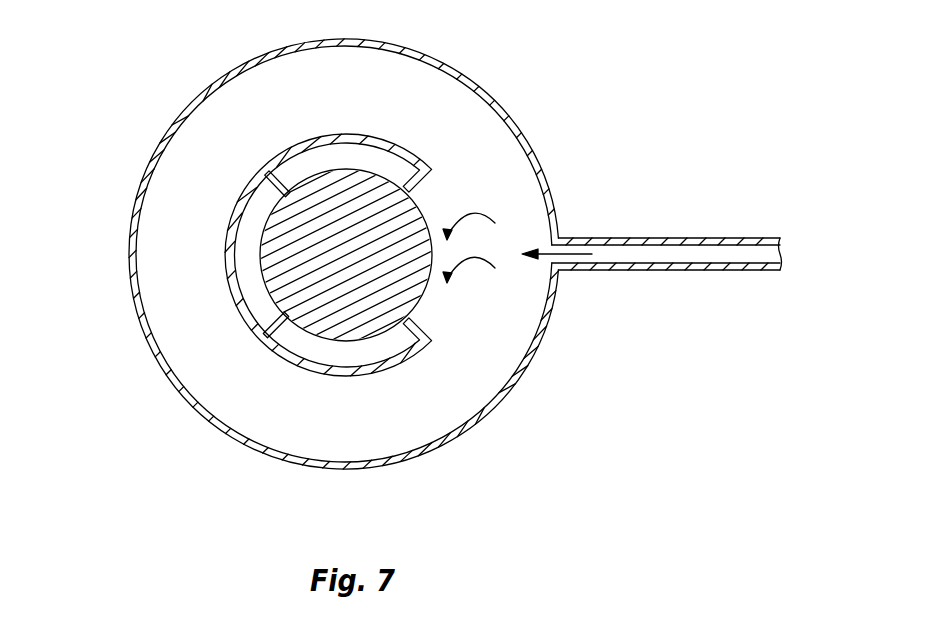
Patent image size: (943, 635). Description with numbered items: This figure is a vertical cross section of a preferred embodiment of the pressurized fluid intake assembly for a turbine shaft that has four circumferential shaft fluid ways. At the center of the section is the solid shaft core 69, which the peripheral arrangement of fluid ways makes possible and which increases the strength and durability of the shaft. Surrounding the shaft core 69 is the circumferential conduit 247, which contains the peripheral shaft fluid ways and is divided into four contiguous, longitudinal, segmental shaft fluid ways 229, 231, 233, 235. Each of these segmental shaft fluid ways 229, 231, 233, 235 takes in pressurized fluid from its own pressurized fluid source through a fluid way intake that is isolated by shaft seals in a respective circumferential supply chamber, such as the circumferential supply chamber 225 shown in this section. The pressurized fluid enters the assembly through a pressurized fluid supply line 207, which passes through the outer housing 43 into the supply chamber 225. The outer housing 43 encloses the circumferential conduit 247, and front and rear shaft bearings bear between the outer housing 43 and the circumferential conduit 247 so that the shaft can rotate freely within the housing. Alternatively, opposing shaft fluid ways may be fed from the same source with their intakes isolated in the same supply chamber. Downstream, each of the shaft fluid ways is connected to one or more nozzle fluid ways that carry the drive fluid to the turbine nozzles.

The outer housing 43 is at (530, 140).
The circumferential supply chamber 225 is at (163, 198).
The pressurized fluid supply line 207 is at (667, 238).
The segmental shaft fluid way 233 is at (243, 220).
The segmental shaft fluid way 231 is at (363, 145).
The segmental shaft fluid way 235 is at (305, 355).
The circumferential conduit 247 is at (237, 307).
The solid shaft core 69 is at (353, 313).
The segmental shaft fluid way 229 is at (437, 308).